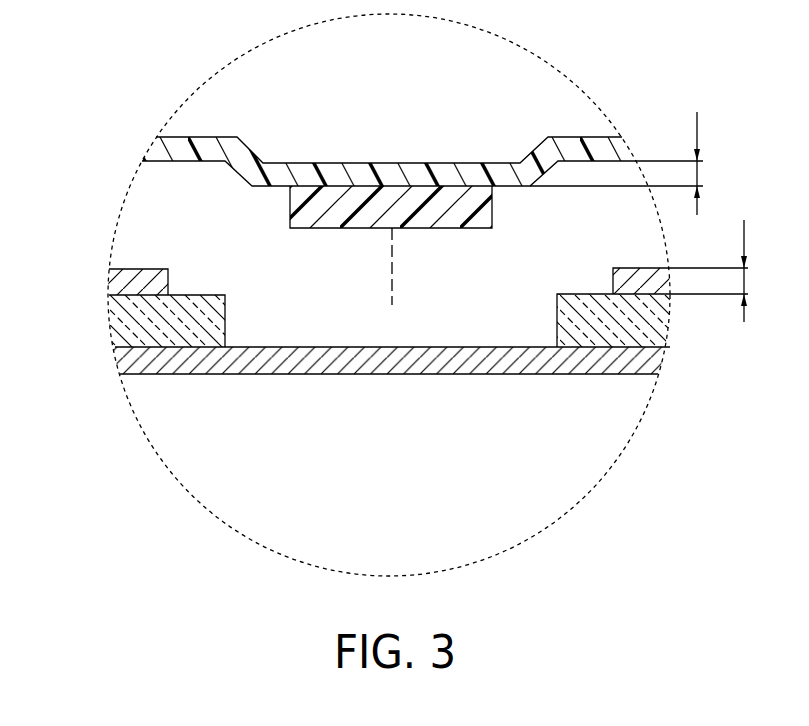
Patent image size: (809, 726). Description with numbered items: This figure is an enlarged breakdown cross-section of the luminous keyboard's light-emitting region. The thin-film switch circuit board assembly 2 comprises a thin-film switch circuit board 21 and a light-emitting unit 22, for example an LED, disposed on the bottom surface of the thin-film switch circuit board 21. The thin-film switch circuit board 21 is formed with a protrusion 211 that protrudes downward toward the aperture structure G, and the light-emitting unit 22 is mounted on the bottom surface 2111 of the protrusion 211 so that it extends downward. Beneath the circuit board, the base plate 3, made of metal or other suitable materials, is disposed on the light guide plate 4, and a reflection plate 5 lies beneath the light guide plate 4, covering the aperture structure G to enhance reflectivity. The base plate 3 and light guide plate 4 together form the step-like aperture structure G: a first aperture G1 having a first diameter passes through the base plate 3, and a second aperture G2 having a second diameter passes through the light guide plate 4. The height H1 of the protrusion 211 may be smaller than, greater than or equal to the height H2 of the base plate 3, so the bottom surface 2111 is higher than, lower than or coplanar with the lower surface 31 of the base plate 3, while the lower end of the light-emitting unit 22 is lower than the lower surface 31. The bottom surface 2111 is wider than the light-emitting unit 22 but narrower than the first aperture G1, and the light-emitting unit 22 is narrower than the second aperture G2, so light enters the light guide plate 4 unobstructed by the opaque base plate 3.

The thin-film switch circuit board assembly 2 is at (422, 152).
The thin-film switch circuit board 21 is at (422, 175).
The light-emitting unit 22 is at (287, 61).
The protrusion 211 is at (238, 173).
The bottom surface of the protrusion 2111 is at (517, 187).
The base plate 3 is at (383, 304).
The lower surface of the base plate 31 is at (643, 297).
The light guide plate 4 is at (116, 329).
The reflection plate 5 is at (344, 378).
The aperture structure G is at (371, 321).
The first aperture G1 is at (173, 284).
The second aperture G2 is at (230, 326).
The height of the protrusion H1 is at (616, 161).
The height of the base plate H2 is at (708, 268).